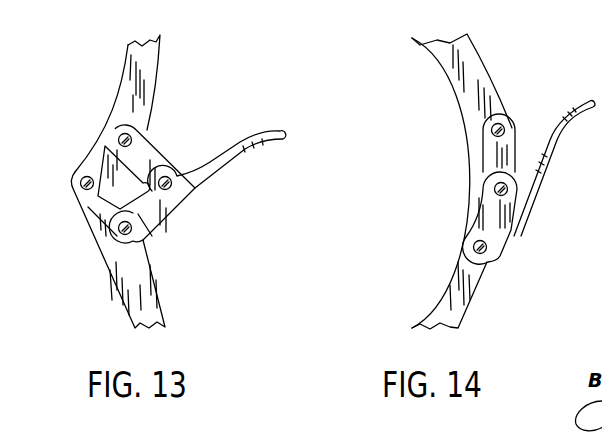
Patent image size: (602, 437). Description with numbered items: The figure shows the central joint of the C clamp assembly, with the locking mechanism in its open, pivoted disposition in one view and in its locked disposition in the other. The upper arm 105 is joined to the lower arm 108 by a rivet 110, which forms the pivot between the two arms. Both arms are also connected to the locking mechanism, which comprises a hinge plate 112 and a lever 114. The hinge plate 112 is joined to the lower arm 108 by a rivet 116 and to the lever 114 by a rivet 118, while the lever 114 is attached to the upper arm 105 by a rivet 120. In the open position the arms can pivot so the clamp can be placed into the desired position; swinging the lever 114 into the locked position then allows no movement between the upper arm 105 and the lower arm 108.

In FIG. 13, the upper arm 105 is at (127, 267).
In FIG. 14, the upper arm 105 is at (457, 271).
In FIG. 13, the lower arm 108 is at (132, 93).
In FIG. 14, the lower arm 108 is at (477, 91).
In FIG. 13, the rivet 110 is at (81, 181).
In FIG. 13, the hinge plate 112 is at (148, 152).
In FIG. 14, the hinge plate 112 is at (508, 143).
In FIG. 13, the lever 114 is at (160, 226).
In FIG. 14, the lever 114 is at (502, 243).
In FIG. 13, the rivet 116 is at (129, 139).
In FIG. 14, the rivet 116 is at (501, 128).
In FIG. 13, the rivet 118 is at (171, 184).
In FIG. 14, the rivet 118 is at (494, 189).
In FIG. 13, the rivet 120 is at (131, 231).
In FIG. 14, the rivet 120 is at (485, 256).